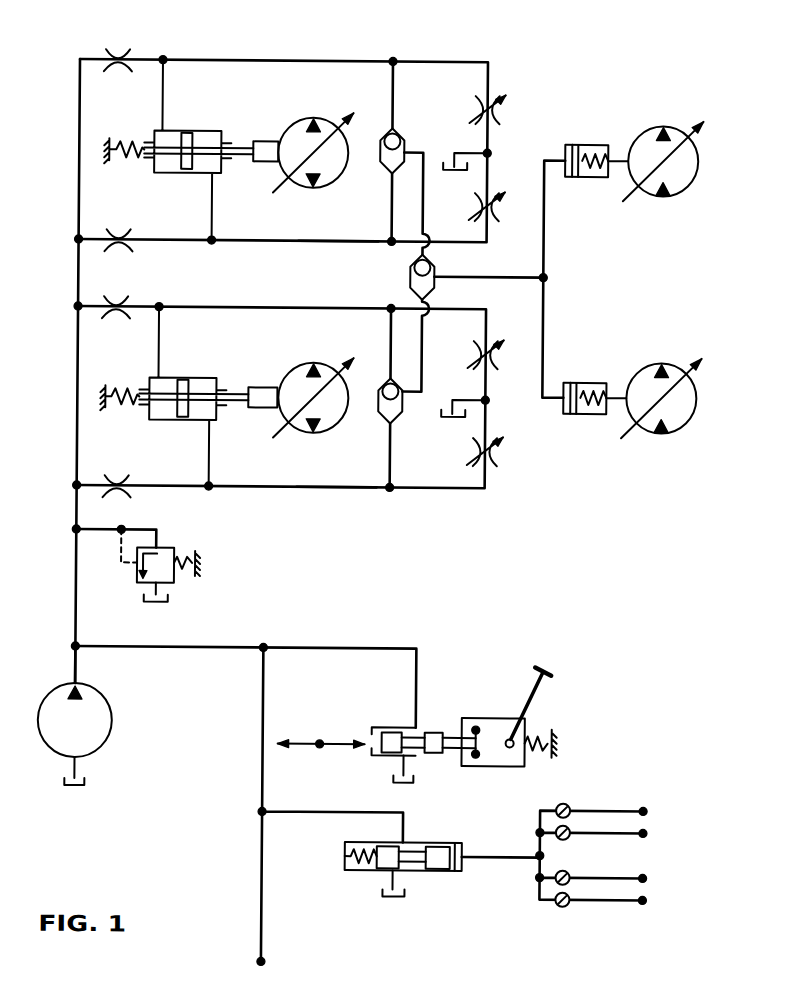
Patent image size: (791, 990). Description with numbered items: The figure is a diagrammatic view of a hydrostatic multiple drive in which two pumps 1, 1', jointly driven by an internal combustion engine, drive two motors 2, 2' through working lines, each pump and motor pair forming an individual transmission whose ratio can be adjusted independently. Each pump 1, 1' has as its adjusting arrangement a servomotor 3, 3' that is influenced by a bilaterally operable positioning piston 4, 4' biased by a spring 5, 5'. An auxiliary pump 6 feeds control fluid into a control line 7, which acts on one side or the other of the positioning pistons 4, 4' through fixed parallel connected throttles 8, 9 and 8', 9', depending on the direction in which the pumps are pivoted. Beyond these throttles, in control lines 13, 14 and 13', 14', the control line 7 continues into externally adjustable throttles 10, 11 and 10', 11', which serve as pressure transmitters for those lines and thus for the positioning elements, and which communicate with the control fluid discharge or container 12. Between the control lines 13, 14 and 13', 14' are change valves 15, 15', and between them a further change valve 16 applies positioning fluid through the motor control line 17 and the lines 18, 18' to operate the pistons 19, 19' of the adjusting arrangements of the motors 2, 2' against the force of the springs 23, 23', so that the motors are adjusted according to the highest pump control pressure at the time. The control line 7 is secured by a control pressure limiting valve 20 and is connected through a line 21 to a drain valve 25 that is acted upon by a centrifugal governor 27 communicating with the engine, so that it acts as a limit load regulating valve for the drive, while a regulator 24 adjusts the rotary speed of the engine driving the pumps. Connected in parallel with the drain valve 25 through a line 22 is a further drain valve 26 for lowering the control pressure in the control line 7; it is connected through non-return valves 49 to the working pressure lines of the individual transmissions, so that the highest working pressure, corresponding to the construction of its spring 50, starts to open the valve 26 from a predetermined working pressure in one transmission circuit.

The pump 1 is at (313, 134).
The pump 1' is at (313, 381).
The motor 2 is at (663, 138).
The motor 2' is at (661, 383).
The servomotor 3 is at (268, 85).
The servomotor 3' is at (254, 426).
The positioning piston 4 is at (199, 125).
The positioning piston 4' is at (194, 396).
The spring 5 is at (124, 119).
The spring 5' is at (123, 365).
The auxiliary pump 6 is at (103, 735).
The control line 7 is at (80, 617).
The fixed throttle 8 is at (118, 39).
The fixed throttle 8' is at (108, 286).
The fixed throttle 9 is at (118, 219).
The fixed throttle 9' is at (114, 462).
The adjustable throttle 10 is at (516, 101).
The adjustable throttle 10' is at (508, 349).
The adjustable throttle 11 is at (503, 220).
The adjustable throttle 11' is at (507, 452).
The container 12 is at (451, 172).
The control line 13 is at (284, 126).
The control line 13' is at (282, 376).
The control line 14 is at (339, 216).
The control line 14' is at (337, 460).
The change valve 15 is at (415, 158).
The change valve 15' is at (421, 398).
The change valve 16 is at (433, 264).
The motor control line 17 is at (502, 272).
The motor control line 18 is at (571, 219).
The motor control line 18' is at (576, 338).
The piston 19 is at (597, 152).
The piston 19' is at (597, 407).
The control pressure limiting valve 20 is at (166, 578).
The line 21 is at (326, 645).
The line 22 is at (350, 808).
The spring 23 is at (591, 191).
The spring 23' is at (590, 429).
The regulator 24 is at (528, 735).
The drain valve 25 is at (437, 737).
The drain valve 26 is at (423, 875).
The centrifugal governor 27 is at (485, 727).
The non-return valves 49 is at (571, 828).
The spring 50 is at (362, 854).